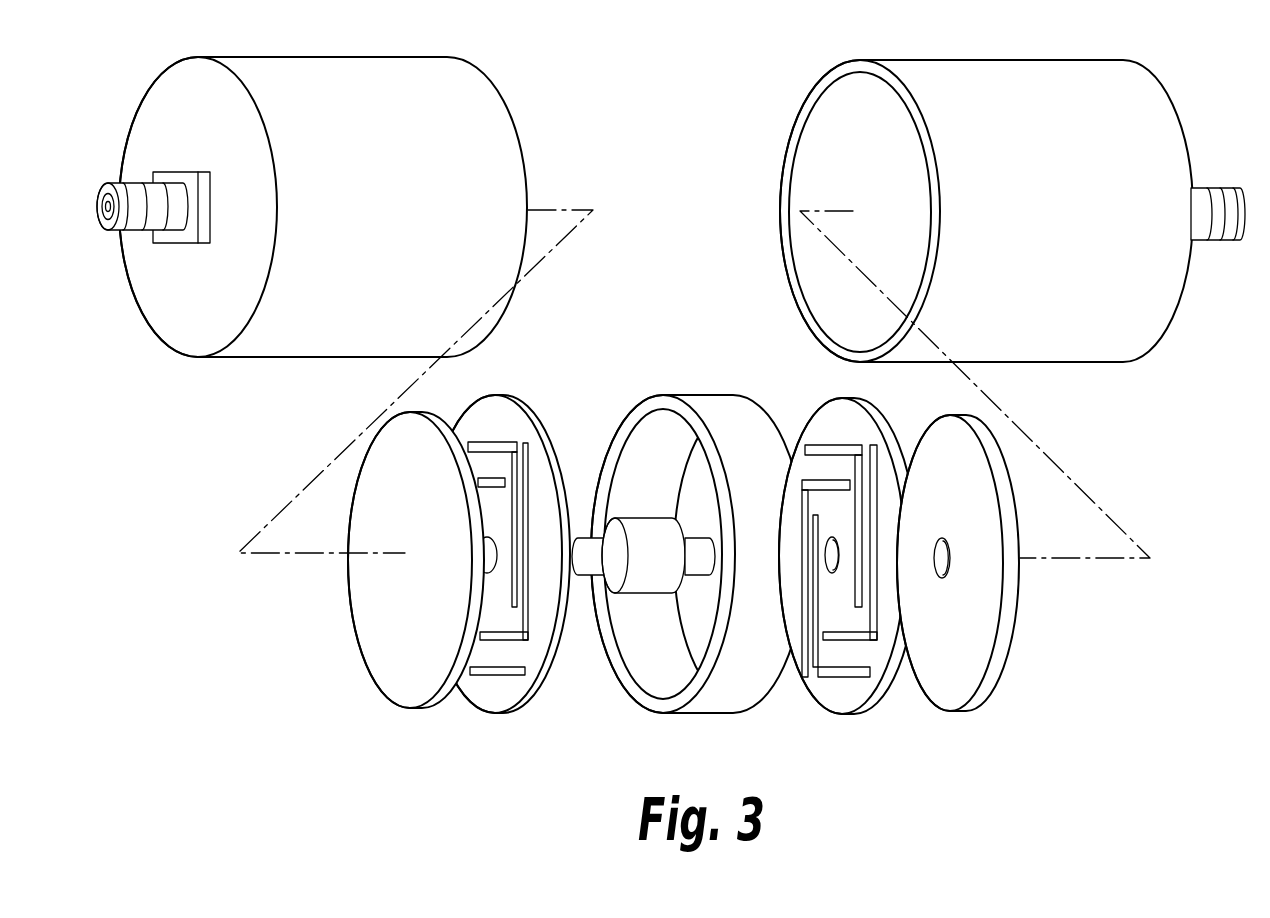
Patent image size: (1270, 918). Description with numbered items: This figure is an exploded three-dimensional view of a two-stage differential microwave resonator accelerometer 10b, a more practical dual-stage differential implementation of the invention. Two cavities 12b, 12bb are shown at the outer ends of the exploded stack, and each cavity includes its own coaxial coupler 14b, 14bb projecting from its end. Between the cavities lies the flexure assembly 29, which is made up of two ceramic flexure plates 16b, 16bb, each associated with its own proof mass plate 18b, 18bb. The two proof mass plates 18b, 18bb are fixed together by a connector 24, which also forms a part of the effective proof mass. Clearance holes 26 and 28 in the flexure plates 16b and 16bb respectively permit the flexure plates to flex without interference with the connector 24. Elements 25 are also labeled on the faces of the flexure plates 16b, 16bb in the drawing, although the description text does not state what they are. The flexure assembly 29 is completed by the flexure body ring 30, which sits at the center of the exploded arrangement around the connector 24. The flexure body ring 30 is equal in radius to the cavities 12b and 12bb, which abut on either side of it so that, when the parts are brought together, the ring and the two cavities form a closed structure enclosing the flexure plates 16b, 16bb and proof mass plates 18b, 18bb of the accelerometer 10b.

The microwave resonator accelerometer 10b is at (1255, 55).
The cavity 12b is at (485, 115).
The cavity 12bb is at (838, 118).
The coaxial coupler 14b is at (120, 222).
The coaxial coupler 14bb is at (1213, 242).
The ceramic flexure plate 16b is at (470, 695).
The ceramic flexure plate 16bb is at (877, 703).
The proof mass plate 18b is at (362, 575).
The proof mass plate 18bb is at (1010, 647).
The connector 24 is at (643, 547).
The electrode bars 25 is at (530, 480).
The clearance hole 26 is at (494, 567).
The clearance hole 28 is at (826, 562).
The flexure assembly 29 is at (997, 737).
The flexure body ring 30 is at (756, 706).